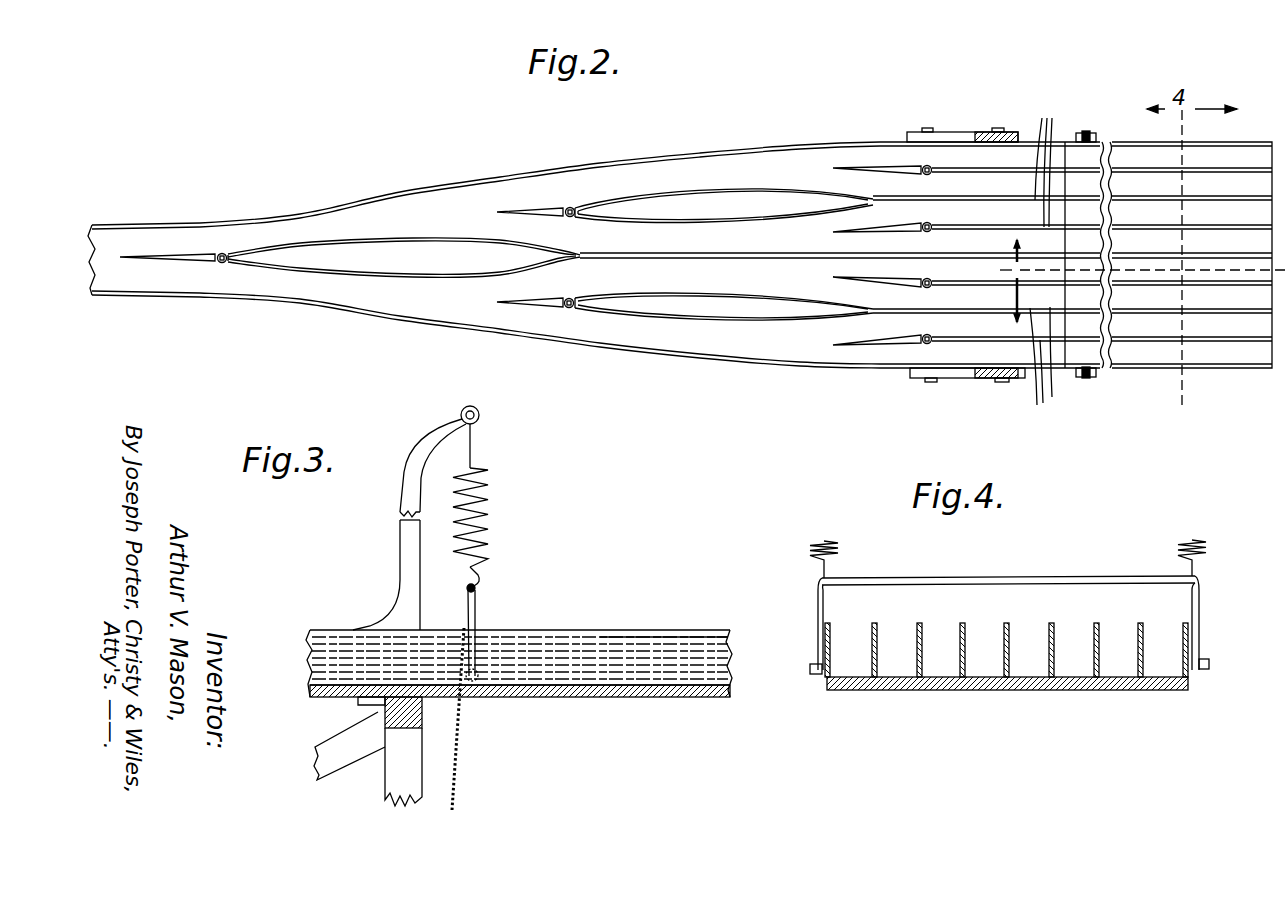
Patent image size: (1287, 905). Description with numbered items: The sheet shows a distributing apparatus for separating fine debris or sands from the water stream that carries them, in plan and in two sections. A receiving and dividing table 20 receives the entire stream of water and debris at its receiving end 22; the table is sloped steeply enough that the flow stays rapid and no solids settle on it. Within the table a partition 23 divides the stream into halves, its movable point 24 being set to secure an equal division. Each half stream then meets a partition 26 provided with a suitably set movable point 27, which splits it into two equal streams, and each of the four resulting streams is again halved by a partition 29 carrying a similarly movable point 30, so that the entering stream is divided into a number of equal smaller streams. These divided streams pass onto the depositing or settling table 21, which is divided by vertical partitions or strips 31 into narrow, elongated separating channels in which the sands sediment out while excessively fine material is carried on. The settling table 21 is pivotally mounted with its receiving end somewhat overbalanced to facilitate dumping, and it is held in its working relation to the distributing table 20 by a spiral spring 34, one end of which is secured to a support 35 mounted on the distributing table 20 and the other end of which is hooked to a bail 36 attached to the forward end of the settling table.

In FIG. 2, the receiving and dividing table 20 is at (728, 149).
In FIG. 2, the depositing table 21 is at (1133, 158).
In FIG. 3, the depositing table 21 is at (655, 690).
In FIG. 4, the depositing table 21 is at (935, 691).
In FIG. 2, the receiving end 22 is at (111, 225).
In FIG. 2, the partition 23 is at (236, 254).
In FIG. 2, the movable point 24 is at (188, 262).
In FIG. 2, the partition 26 is at (581, 206).
In FIG. 2, the movable point 27 is at (540, 209).
In FIG. 2, the partition 29 is at (1043, 263).
In FIG. 3, the partition 29 is at (344, 642).
In FIG. 2, the movable point 30 is at (862, 228).
In FIG. 2, the vertical partition 31 is at (1242, 180).
In FIG. 3, the vertical partition 31 is at (665, 637).
In FIG. 4, the vertical partition 31 is at (875, 623).
In FIG. 3, the spiral spring 34 is at (490, 516).
In FIG. 4, the spiral spring 34 is at (840, 553).
In FIG. 2, the support 35 is at (977, 131).
In FIG. 3, the support 35 is at (406, 572).
In FIG. 2, the bail 36 is at (1080, 132).
In FIG. 3, the bail 36 is at (476, 614).
In FIG. 4, the bail 36 is at (1013, 580).